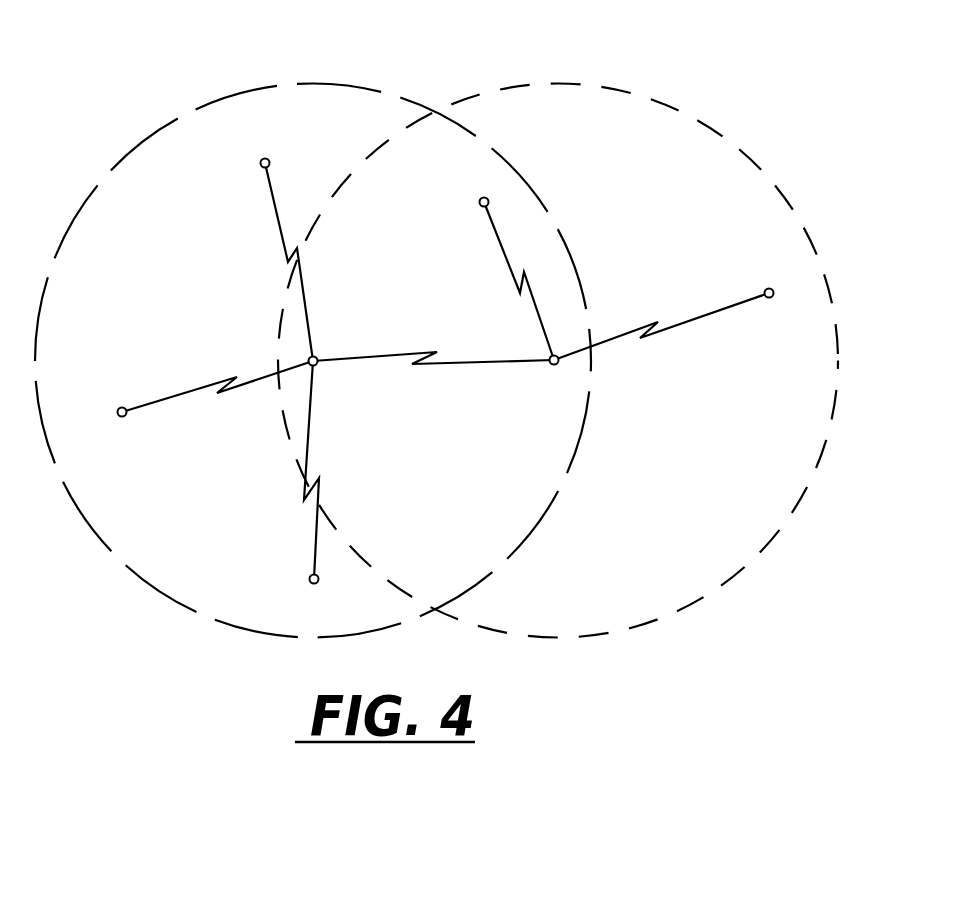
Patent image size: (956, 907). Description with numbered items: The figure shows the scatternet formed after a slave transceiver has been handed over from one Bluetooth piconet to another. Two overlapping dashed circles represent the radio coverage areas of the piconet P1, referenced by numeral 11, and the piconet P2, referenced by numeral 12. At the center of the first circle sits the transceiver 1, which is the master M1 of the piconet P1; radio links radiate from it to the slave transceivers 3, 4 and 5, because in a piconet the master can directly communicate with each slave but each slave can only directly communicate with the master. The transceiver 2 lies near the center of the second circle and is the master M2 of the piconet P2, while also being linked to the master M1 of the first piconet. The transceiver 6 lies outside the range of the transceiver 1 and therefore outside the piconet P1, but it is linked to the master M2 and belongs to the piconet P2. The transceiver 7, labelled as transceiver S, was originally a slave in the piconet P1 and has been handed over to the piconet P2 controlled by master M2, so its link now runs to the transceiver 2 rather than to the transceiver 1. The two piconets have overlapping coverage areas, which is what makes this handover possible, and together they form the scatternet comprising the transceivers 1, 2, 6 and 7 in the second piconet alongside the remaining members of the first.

The network (Bluetooth piconet P1) 11 is at (362, 87).
The piconet P2 12 is at (676, 98).
The transceiver 1 is at (318, 366).
The transceiver 2 is at (550, 366).
The transceiver 3 is at (310, 582).
The transceiver 4 is at (118, 415).
The transceiver 5 is at (261, 162).
The transceiver 6 is at (772, 289).
The slave transceiver 7 is at (481, 200).
The piconet P1 is at (116, 149).
The piconet P2 is at (770, 147).
The transceiver S is at (503, 197).
The master M1 is at (333, 339).
The master M2 is at (574, 379).